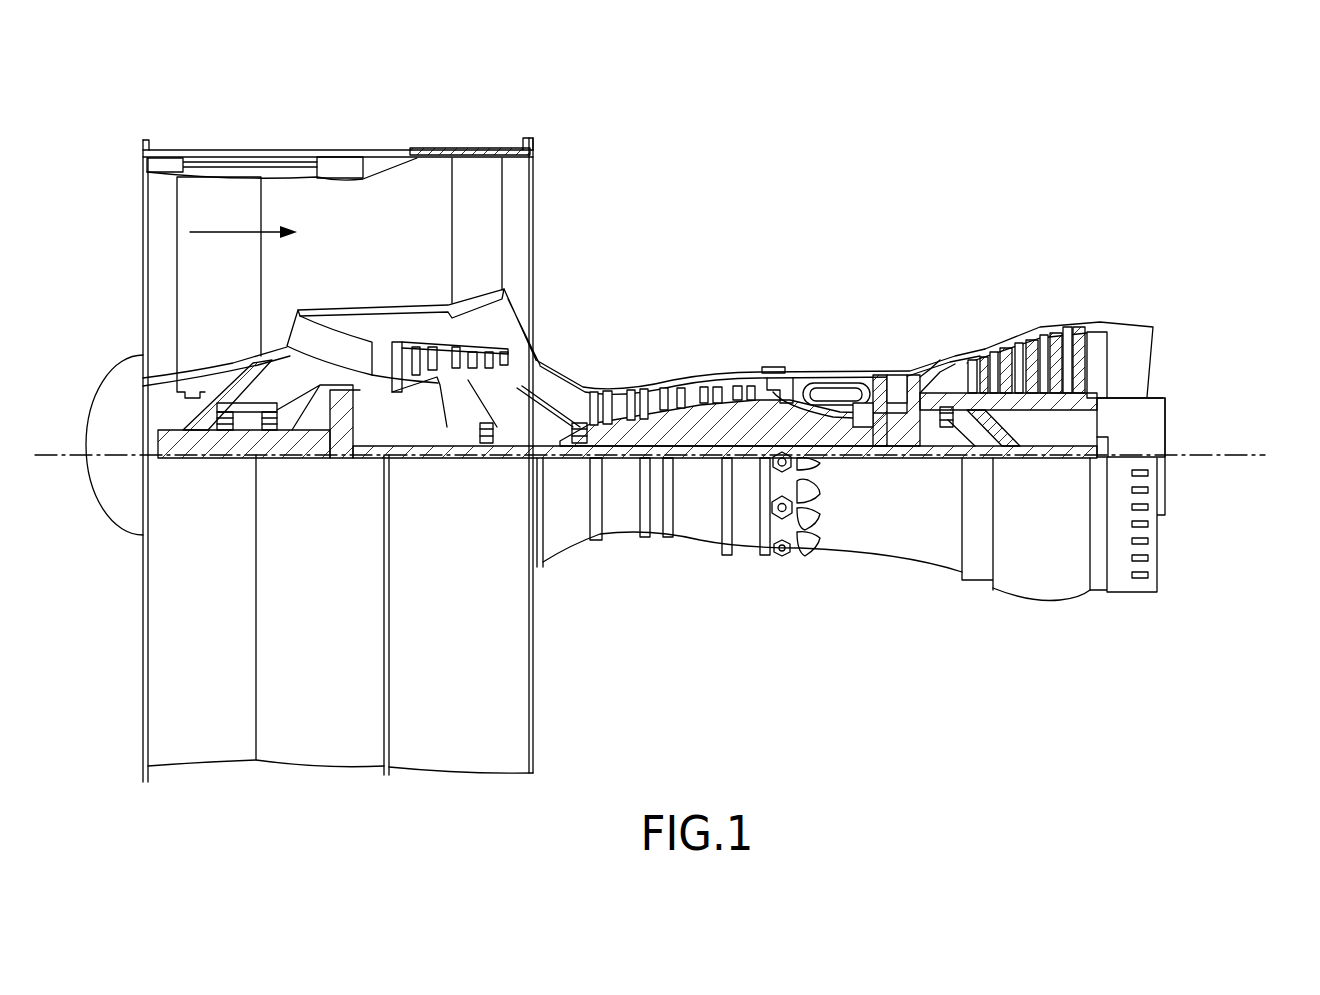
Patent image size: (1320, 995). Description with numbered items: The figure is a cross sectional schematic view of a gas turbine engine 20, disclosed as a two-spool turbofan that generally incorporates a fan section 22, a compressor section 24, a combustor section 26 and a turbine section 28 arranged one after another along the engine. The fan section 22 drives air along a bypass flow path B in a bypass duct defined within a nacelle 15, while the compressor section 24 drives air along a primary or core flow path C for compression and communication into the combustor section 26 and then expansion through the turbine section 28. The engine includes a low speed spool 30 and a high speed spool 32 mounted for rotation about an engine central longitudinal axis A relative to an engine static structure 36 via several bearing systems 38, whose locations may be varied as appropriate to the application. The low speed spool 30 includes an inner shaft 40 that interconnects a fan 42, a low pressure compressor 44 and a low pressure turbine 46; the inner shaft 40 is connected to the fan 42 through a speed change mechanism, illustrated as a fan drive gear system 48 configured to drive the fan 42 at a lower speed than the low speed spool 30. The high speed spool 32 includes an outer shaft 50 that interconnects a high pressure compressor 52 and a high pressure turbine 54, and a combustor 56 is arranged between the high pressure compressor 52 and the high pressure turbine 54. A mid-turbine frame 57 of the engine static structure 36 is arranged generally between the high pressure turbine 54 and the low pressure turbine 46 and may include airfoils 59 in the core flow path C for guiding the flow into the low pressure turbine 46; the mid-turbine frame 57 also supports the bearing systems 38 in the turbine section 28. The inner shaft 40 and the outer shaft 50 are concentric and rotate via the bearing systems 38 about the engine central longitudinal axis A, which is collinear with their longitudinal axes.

The gas turbine engine 20 is at (866, 156).
The fan section 22 is at (249, 126).
The compressor section 24 is at (587, 345).
The combustor section 26 is at (823, 330).
The turbine section 28 is at (990, 290).
The nacelle 15 is at (335, 163).
The fan 42 is at (201, 272).
The low pressure compressor 44 is at (462, 352).
The high pressure compressor 52 is at (703, 383).
The high speed spool 32 is at (757, 410).
The high pressure turbine 54 is at (892, 372).
The combustor 56 is at (834, 393).
The mid-turbine frame 57 is at (941, 344).
The low pressure turbine 46 is at (1030, 338).
The airfoils 59 is at (938, 390).
The bearing systems 38 is at (484, 446).
The fan drive gear system 48 is at (345, 447).
The inner shaft 40 is at (556, 458).
The low speed spool 30 is at (702, 460).
The engine static structure 36 is at (747, 530).
The outer shaft 50 is at (815, 446).
The engine central longitudinal axis A is at (1210, 452).
The bypass flow path B is at (225, 230).
The core flow path C is at (308, 338).